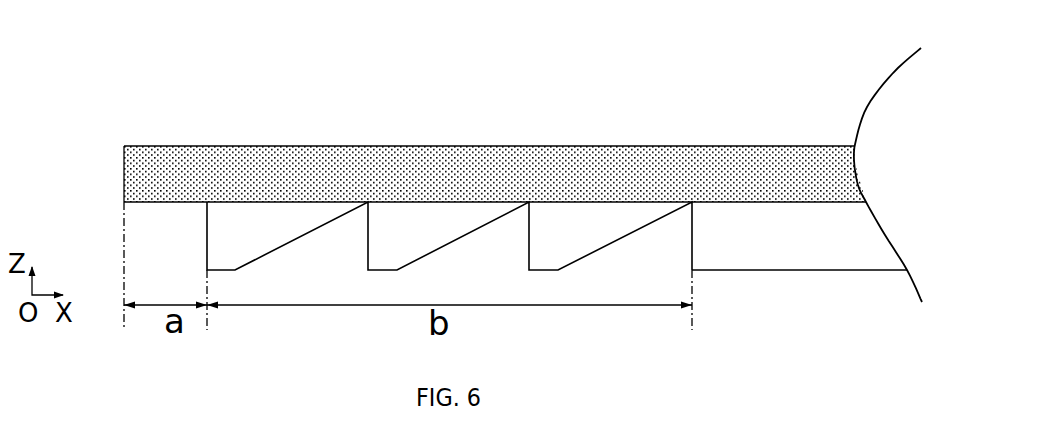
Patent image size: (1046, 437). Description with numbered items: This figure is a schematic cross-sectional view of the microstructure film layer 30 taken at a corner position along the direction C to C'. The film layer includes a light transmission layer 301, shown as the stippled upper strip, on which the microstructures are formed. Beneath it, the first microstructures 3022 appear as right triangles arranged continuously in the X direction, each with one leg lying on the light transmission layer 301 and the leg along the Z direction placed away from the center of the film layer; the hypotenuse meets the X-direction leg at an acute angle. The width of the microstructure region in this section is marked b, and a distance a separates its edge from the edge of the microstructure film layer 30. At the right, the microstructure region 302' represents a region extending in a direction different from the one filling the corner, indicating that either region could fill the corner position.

The microstructure film layer 30 is at (83, 98).
The light transmission layer 301 is at (287, 163).
The first microstructures 3022 is at (235, 243).
The microstructure region 302' is at (807, 191).